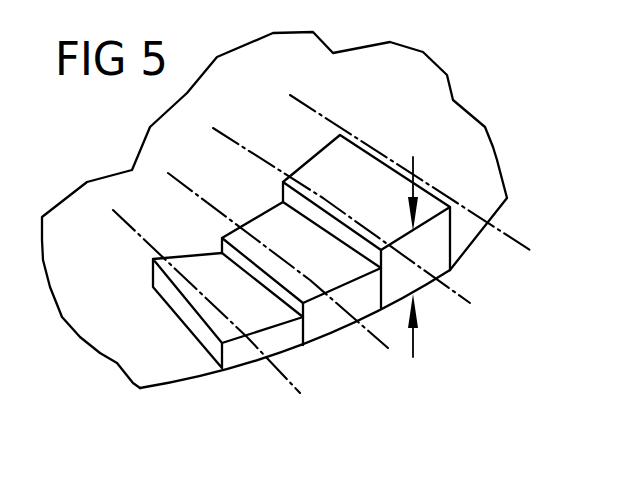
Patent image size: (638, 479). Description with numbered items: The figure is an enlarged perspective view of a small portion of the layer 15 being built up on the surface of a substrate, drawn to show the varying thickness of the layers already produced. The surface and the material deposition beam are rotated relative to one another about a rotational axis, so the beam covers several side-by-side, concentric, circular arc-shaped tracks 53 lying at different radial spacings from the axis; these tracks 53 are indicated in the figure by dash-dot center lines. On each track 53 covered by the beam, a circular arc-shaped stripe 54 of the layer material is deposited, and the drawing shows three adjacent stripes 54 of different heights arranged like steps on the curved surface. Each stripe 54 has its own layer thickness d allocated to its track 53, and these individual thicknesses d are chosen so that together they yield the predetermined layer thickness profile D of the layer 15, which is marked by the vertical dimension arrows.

The layer 15 is at (226, 222).
The tracks 53 is at (557, 208).
The stripes 54 is at (333, 173).
The layer thickness profile D is at (437, 230).
The layer thickness d is at (410, 243).